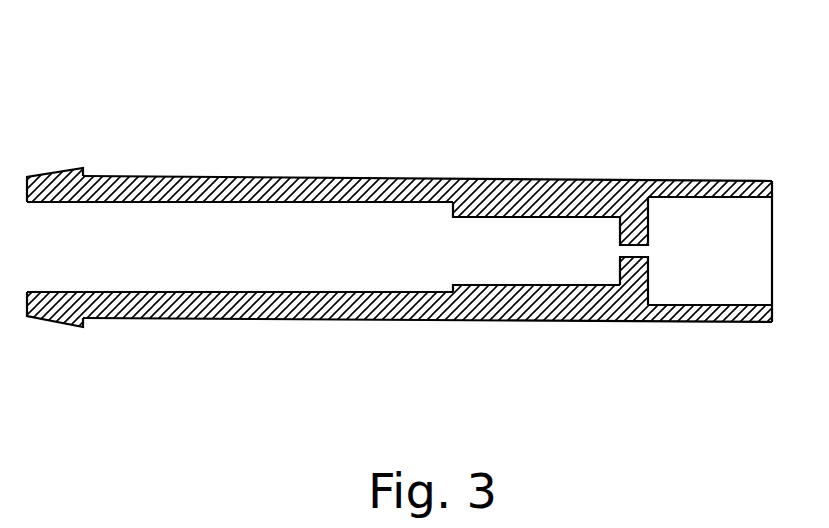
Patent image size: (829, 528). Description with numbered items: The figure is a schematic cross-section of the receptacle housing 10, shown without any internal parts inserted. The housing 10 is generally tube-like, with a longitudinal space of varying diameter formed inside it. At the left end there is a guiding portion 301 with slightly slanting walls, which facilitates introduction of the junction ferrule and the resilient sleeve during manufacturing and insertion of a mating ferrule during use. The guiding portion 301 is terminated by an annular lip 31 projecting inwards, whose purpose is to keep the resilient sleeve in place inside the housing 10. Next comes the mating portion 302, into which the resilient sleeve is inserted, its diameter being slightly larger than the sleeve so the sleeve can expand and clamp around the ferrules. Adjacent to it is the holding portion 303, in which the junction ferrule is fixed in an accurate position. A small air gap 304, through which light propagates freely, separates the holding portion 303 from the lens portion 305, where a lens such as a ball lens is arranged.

The housing 10 is at (138, 134).
The guiding portion 301 is at (35, 245).
The mating portion 302 is at (218, 232).
The holding portion 303 is at (550, 243).
The air gap 304 is at (632, 250).
The lens portion 305 is at (717, 233).
The annular lip 31 is at (60, 292).